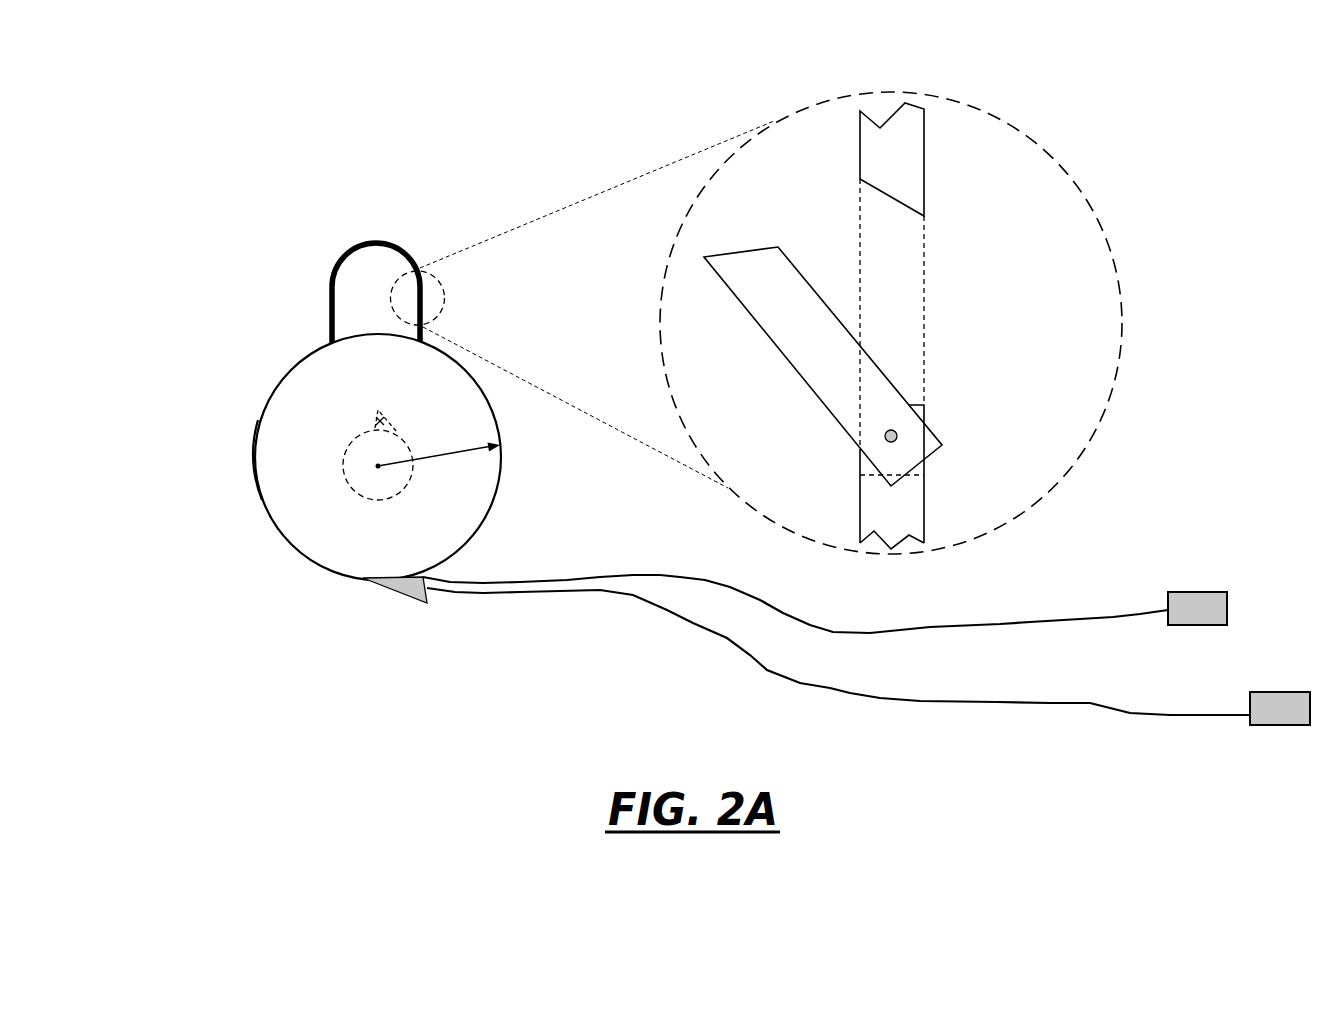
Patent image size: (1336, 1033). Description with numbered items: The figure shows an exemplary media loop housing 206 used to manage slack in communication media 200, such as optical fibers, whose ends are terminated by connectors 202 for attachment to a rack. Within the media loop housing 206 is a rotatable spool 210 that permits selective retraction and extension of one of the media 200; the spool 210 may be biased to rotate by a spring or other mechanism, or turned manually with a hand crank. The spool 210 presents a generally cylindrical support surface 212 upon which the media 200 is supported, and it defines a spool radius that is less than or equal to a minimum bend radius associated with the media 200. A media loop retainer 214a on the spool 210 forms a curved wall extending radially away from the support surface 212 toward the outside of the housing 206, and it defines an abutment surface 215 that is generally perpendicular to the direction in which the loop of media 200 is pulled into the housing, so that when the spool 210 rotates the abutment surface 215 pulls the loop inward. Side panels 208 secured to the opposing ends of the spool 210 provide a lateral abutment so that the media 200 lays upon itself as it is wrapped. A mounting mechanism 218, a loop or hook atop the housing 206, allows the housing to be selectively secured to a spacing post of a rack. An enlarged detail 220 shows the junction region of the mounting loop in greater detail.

The media 200 is at (687, 622).
The connectors 202 is at (1252, 720).
The media loop housing 206 is at (251, 148).
The side panels 208 is at (303, 422).
The spool 210 is at (370, 498).
The support surface 212 is at (255, 445).
The media loop retainer 214a is at (382, 420).
The abutment surface 215 is at (380, 422).
The mounting mechanism 218 is at (343, 255).
The detail of loop junction 220 is at (962, 256).